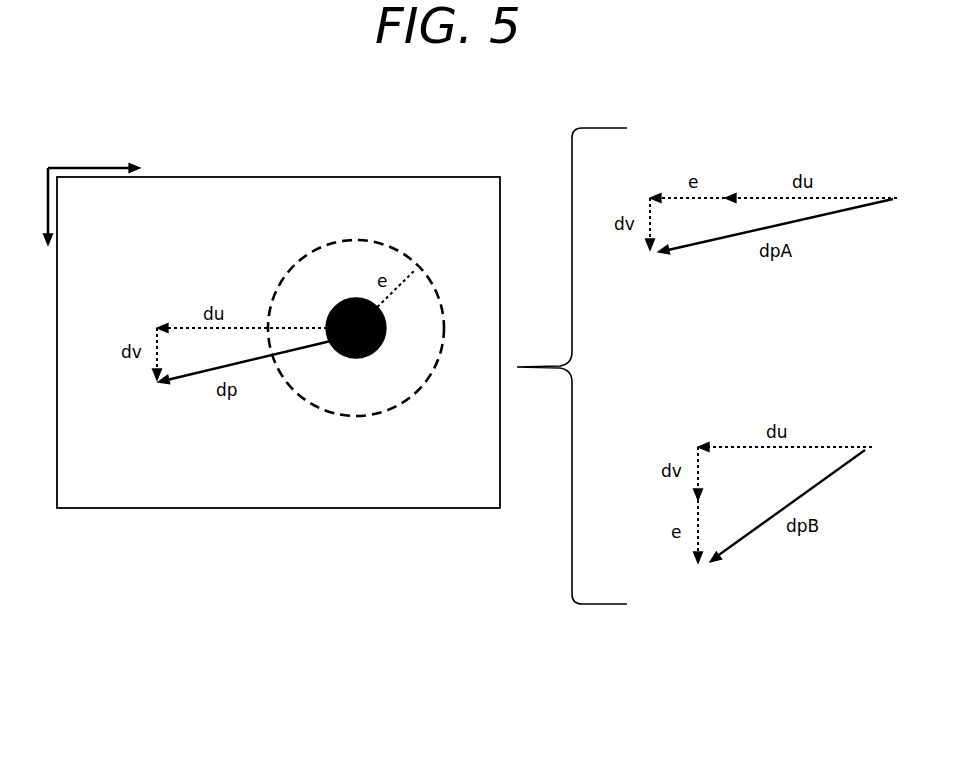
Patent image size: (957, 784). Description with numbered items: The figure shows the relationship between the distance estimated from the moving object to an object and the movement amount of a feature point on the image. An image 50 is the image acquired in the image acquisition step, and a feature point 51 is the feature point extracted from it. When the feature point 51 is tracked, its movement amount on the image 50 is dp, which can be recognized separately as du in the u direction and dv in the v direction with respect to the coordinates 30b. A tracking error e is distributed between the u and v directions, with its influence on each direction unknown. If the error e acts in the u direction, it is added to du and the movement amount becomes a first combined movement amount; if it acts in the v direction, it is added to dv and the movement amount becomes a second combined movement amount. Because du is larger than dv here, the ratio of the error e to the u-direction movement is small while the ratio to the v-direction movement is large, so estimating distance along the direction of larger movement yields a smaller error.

The coordinates 30b is at (92, 168).
The image 50 is at (378, 175).
The feature point 51 is at (363, 360).